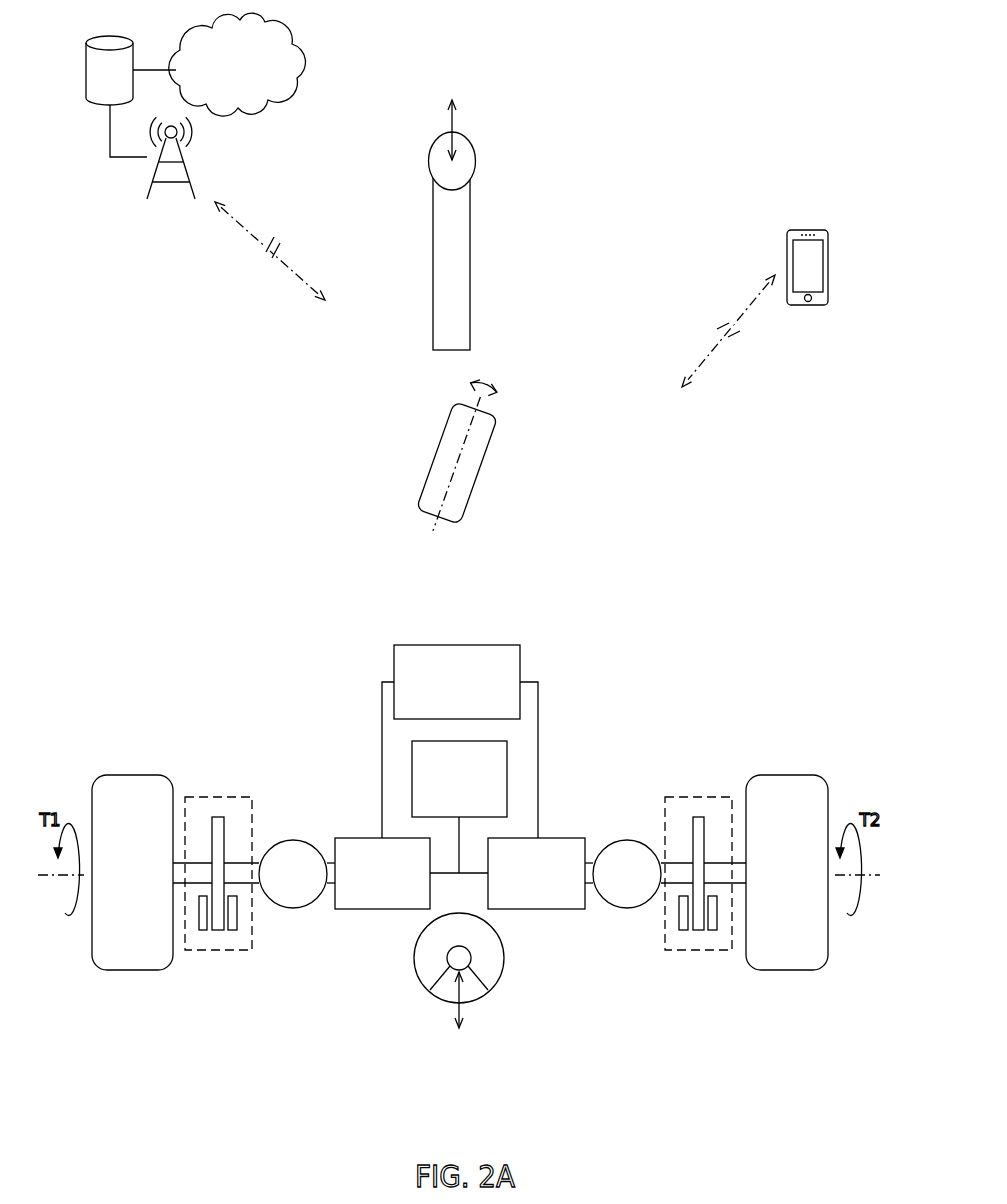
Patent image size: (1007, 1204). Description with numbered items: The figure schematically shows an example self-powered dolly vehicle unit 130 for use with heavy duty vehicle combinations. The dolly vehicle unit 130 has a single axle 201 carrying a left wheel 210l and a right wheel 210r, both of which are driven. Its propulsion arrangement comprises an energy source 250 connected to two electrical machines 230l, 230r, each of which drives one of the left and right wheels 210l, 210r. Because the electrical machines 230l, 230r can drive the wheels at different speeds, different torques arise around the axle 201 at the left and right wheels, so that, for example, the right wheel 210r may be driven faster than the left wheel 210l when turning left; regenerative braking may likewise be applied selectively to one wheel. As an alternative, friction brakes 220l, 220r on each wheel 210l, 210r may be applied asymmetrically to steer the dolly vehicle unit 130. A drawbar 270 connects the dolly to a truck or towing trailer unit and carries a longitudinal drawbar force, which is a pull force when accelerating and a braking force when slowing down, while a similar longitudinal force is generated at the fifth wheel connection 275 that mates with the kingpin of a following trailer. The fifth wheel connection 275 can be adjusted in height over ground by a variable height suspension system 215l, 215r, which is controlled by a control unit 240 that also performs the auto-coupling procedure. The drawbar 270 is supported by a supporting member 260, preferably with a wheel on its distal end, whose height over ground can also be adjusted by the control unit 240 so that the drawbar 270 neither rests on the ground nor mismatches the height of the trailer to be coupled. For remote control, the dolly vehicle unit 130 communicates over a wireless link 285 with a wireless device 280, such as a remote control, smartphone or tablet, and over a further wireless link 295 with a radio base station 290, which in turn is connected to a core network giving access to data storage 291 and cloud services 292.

The dolly vehicle unit 130 is at (743, 80).
The single axle 201 is at (53, 877).
The left wheel 210l is at (132, 872).
The right wheel 210r is at (787, 872).
The variable height suspension system (left) 215l is at (293, 874).
The variable height suspension system (right) 215r is at (627, 874).
The friction brake (left) 220l is at (233, 796).
The friction brake (right) 220r is at (693, 796).
The electrical machine (left) 230l is at (382, 873).
The electrical machine (right) 230r is at (536, 873).
The control unit 240 is at (459, 807).
The energy source 250 is at (460, 741).
The supporting member 260 is at (483, 462).
The drawbar 270 is at (476, 165).
The fifth wheel connection 275 is at (504, 958).
The wireless device 280 is at (797, 306).
The wireless link 285 is at (718, 331).
The radio base station 290 is at (161, 201).
The data storage 291 is at (92, 101).
The cloud services 292 is at (237, 64).
The wireless link 295 is at (270, 255).